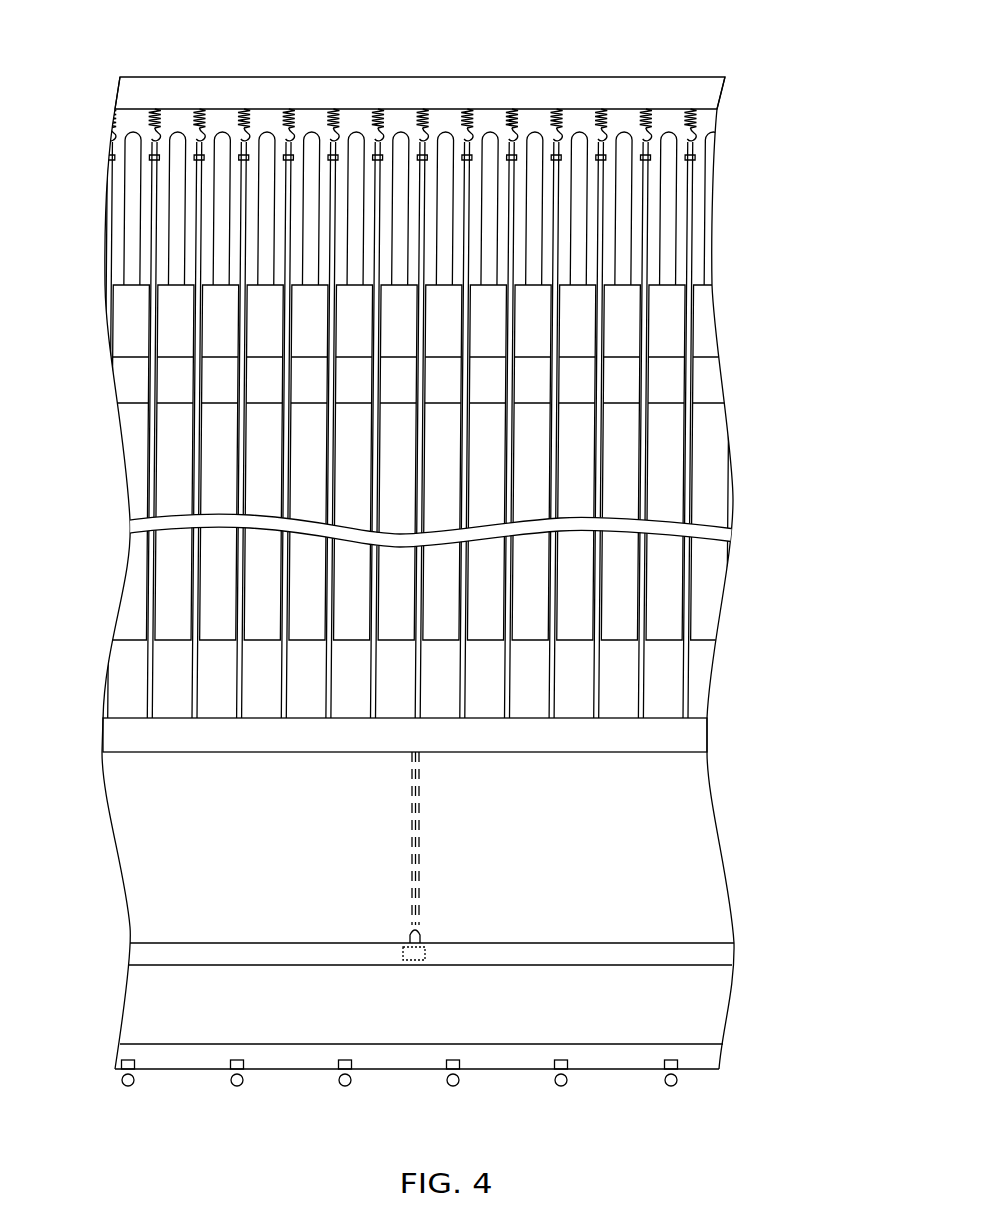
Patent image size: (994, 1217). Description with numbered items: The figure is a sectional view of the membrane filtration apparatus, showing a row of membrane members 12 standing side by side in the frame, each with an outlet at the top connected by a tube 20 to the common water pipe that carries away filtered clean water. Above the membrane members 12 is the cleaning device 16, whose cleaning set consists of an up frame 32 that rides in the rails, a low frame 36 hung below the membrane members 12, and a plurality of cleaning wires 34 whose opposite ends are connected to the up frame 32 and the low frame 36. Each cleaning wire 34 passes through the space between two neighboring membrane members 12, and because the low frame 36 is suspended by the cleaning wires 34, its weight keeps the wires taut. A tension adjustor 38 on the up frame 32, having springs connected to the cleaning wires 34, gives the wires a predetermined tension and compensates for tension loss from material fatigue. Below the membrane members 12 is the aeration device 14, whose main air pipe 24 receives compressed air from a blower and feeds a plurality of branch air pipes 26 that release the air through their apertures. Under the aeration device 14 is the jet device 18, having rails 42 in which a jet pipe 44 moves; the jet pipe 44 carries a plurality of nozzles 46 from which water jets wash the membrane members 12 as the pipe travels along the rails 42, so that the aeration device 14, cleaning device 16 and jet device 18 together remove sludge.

The membrane member 12 is at (707, 385).
The aeration device 14 is at (415, 1106).
The cleaning device 16 is at (431, 361).
The jet device 18 is at (449, 1013).
The tube 20 is at (133, 237).
The main air pipe 24 is at (710, 1058).
The branch air pipe 26 is at (675, 1085).
The up frame 32 is at (483, 93).
The cleaning wire 34 is at (647, 225).
The low frame 36 is at (687, 742).
The tension adjustor 38 is at (695, 122).
The rail 42 is at (710, 953).
The jet pipe 44 is at (425, 953).
The nozzle 46 is at (418, 938).